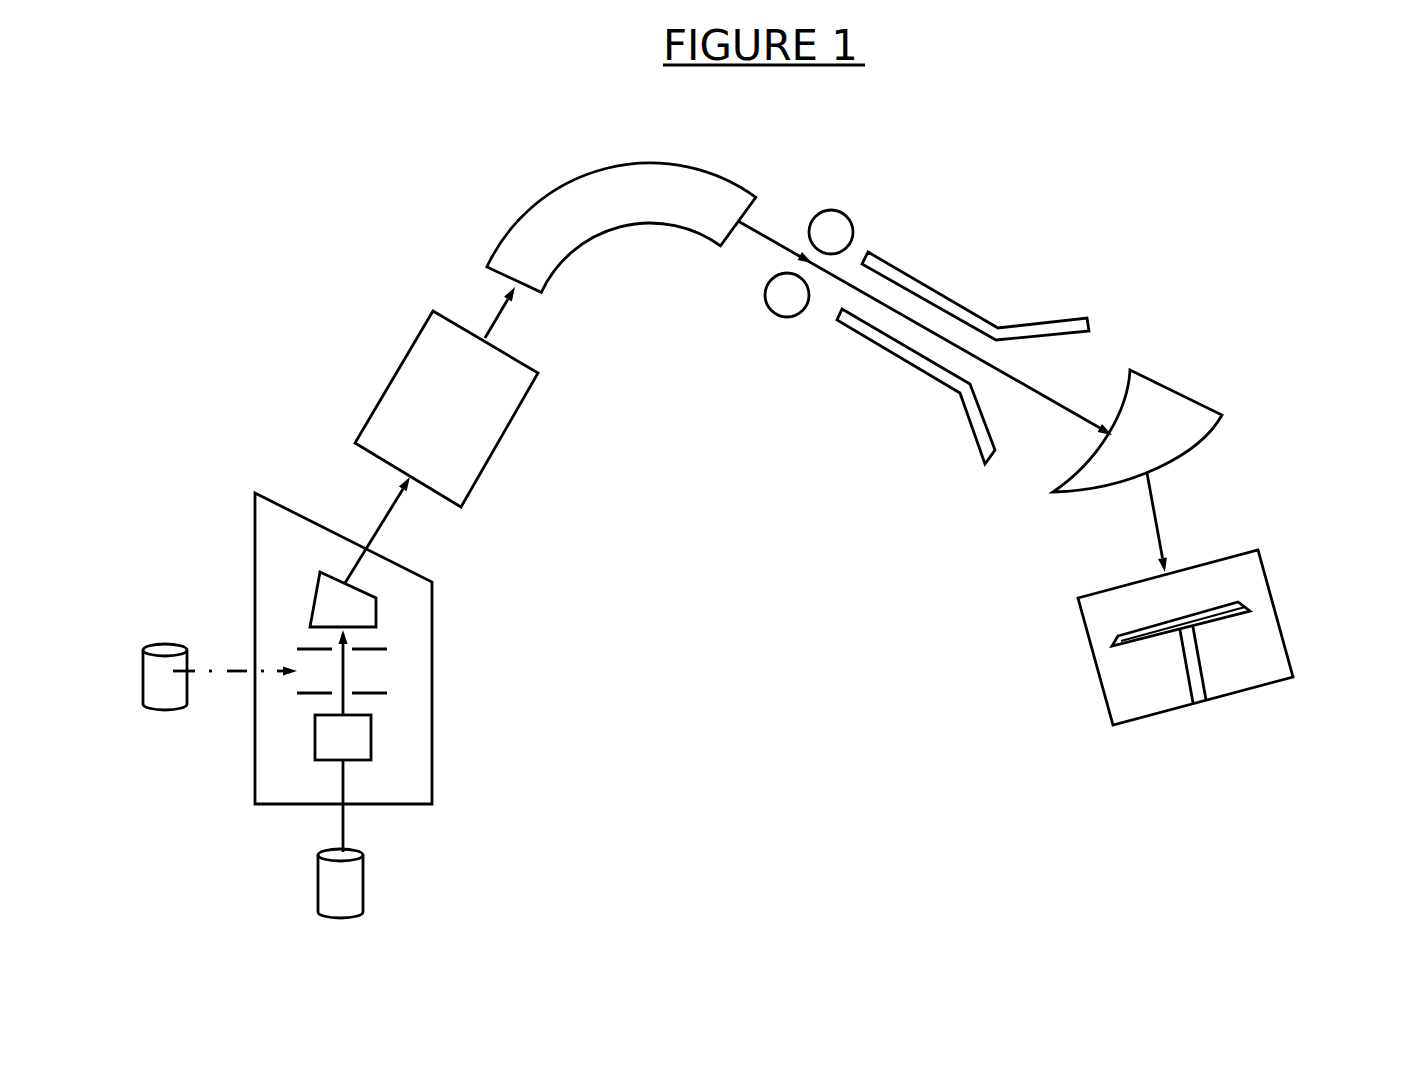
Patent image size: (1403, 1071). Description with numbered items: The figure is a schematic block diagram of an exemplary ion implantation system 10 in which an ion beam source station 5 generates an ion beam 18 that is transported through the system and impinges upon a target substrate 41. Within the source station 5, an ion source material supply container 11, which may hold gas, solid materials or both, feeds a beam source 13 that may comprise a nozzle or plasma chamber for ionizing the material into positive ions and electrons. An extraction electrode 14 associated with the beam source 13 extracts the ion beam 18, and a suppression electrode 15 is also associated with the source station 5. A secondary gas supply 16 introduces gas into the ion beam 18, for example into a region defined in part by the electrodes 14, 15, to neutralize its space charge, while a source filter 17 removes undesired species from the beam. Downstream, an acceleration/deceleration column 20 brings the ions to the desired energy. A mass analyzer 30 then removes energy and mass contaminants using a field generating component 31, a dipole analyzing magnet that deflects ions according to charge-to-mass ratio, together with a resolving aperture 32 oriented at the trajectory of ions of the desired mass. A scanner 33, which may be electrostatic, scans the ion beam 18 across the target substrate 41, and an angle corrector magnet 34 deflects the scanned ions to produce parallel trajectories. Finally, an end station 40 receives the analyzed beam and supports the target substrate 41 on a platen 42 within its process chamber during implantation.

The ion implantation system 10 is at (372, 83).
The ion beam source station 5 is at (453, 592).
The ion source material supply container 11 is at (367, 883).
The beam source 13 is at (382, 764).
The extraction electrode 14 is at (389, 708).
The suppression electrode 15 is at (397, 645).
The secondary gas supply 16 is at (150, 640).
The source filter 17 is at (322, 572).
The ion beam 18 is at (383, 512).
The acceleration/deceleration column 20 is at (407, 345).
The mass analyzer 30 is at (687, 263).
The field generating component 31 is at (603, 247).
The resolving aperture 32 is at (795, 223).
The scanner 33 is at (948, 295).
The angle corrector magnet 34 is at (1173, 388).
The end station 40 is at (1202, 659).
The target substrate 41 is at (1118, 640).
The platen 42 is at (1133, 648).